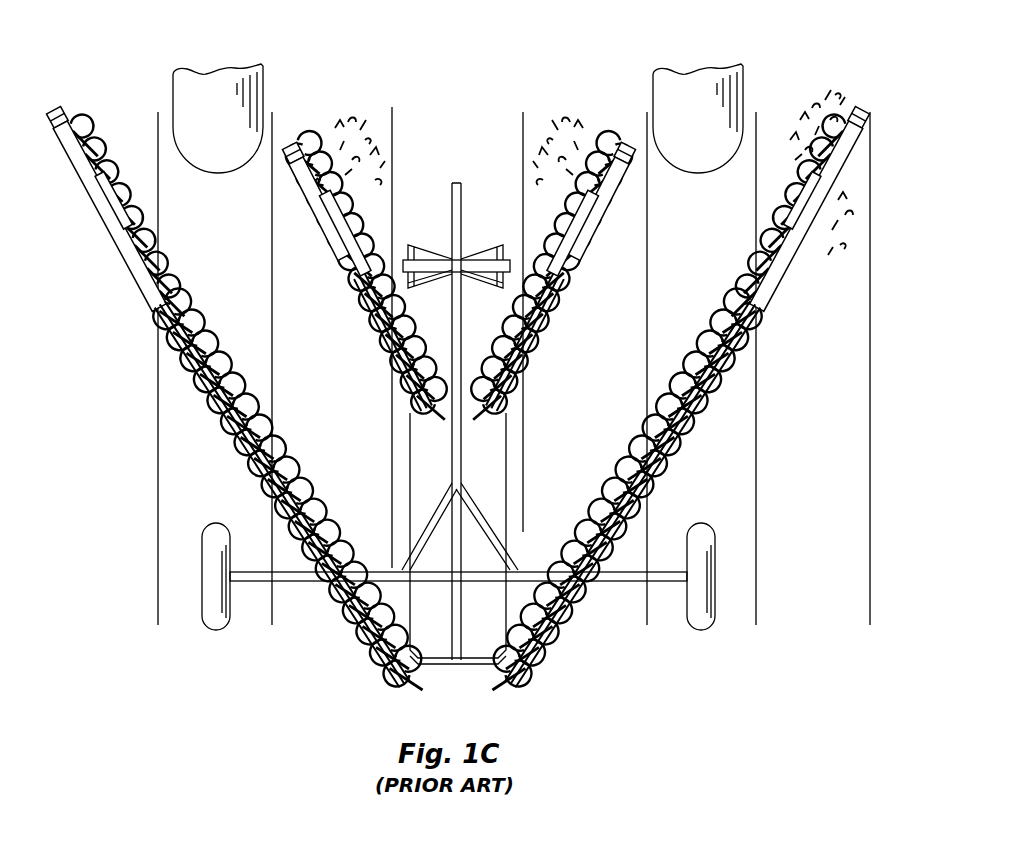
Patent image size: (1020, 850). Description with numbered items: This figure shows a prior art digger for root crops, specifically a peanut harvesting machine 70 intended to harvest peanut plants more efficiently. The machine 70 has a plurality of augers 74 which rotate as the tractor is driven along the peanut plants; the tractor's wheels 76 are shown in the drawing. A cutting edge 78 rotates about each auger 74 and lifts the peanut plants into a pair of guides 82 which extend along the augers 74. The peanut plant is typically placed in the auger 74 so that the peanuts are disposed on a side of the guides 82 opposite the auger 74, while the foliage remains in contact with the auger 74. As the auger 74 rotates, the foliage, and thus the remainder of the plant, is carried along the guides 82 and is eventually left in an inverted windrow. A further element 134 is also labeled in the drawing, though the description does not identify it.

The machine 70 is at (542, 107).
The auger 74 is at (278, 424).
The wheels 76 is at (203, 167).
The cutting edge 78 is at (100, 230).
The guides 82 is at (380, 353).
The cross member 134 is at (490, 252).